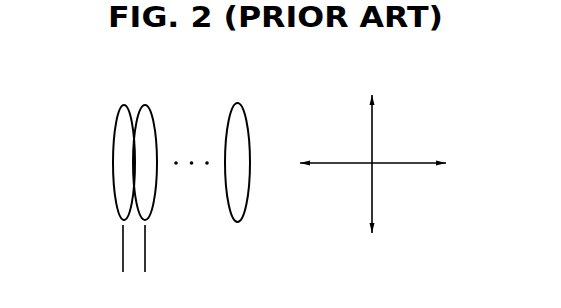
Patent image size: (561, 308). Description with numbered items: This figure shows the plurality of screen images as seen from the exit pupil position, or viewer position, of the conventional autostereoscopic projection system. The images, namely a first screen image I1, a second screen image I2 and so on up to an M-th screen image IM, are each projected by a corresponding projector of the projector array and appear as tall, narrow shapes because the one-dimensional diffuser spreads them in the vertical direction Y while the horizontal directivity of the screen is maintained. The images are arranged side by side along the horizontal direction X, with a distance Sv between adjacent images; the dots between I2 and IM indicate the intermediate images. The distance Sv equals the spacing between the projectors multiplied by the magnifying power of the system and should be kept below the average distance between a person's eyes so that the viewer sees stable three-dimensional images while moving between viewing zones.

The first screen image I1 is at (124, 104).
The second screen image I2 is at (144, 104).
The M-th screen image IM is at (238, 102).
The distance between images Sv is at (172, 253).
The horizontal direction X is at (382, 163).
The vertical direction Y is at (371, 149).